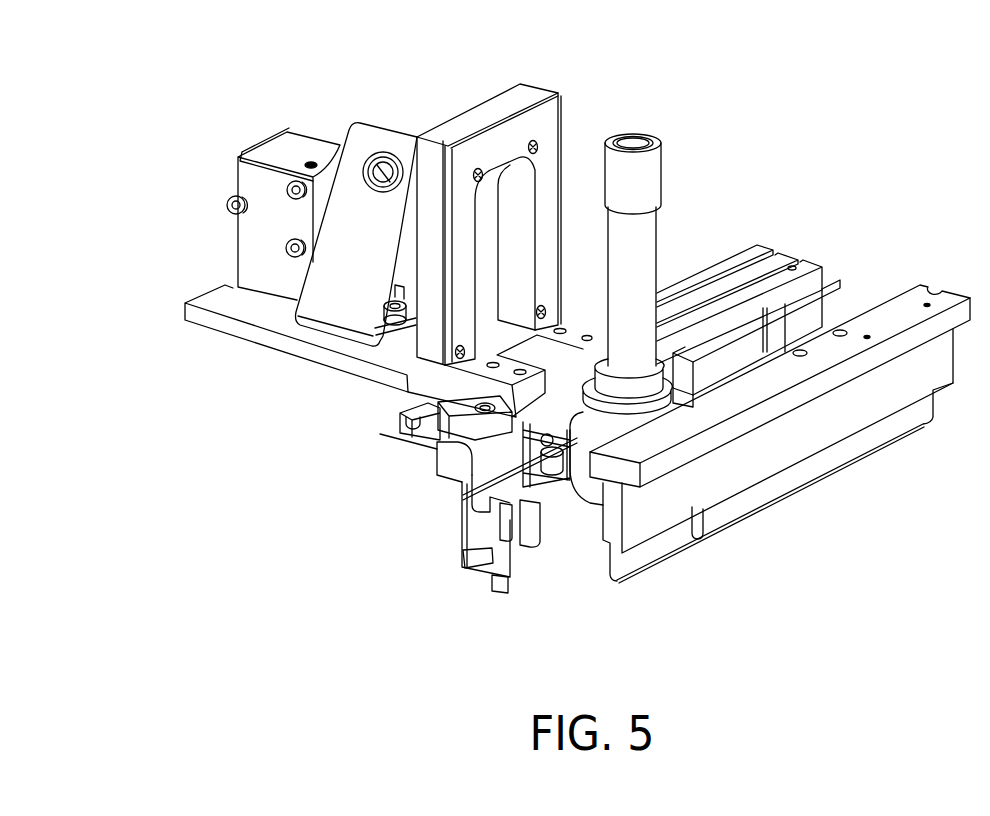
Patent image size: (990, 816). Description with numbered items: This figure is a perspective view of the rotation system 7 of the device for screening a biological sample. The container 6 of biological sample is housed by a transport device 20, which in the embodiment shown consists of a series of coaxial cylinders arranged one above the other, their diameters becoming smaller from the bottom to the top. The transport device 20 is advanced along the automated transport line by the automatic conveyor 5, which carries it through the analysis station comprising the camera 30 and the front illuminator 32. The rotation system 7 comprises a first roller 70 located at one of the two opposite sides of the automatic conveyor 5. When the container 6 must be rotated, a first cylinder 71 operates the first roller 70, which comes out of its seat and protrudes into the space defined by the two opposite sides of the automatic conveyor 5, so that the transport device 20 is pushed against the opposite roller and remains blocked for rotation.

The automatic conveyor 5 is at (695, 412).
The container 6 is at (637, 277).
The rotation system 7 is at (565, 517).
The transport device 20 is at (597, 487).
The camera 30 is at (273, 230).
The front illuminator 32 is at (500, 152).
The first roller 70 is at (530, 468).
The first cylinder 71 is at (450, 460).